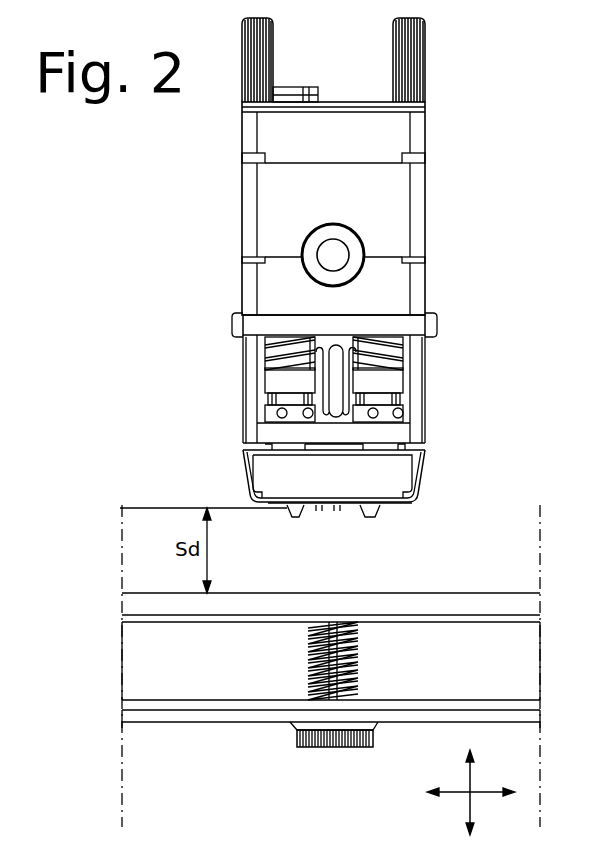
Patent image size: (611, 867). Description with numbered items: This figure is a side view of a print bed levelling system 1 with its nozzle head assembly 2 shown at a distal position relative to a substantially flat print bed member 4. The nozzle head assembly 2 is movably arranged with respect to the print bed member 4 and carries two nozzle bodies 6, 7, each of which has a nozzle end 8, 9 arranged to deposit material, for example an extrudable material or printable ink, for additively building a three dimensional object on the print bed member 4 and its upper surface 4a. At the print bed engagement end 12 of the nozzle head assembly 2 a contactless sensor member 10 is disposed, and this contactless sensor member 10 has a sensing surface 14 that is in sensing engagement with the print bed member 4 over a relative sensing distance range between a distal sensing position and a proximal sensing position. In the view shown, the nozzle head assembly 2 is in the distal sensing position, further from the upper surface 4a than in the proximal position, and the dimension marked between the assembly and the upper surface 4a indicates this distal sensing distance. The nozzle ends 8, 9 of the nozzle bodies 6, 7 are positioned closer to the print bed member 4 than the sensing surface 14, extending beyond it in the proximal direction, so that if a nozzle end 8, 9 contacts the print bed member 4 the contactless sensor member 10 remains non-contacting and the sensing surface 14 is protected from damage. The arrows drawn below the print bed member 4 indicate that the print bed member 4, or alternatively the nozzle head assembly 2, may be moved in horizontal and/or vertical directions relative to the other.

The print bed levelling system 1 is at (375, 304).
The nozzle head assembly 2 is at (383, 238).
The print bed member 4 is at (346, 649).
The upper surface 4a is at (457, 593).
The nozzle body 6 is at (283, 380).
The nozzle body 7 is at (388, 383).
The nozzle end 8 is at (300, 510).
The nozzle end 9 is at (371, 507).
The contactless sensor member 10 is at (337, 507).
The print bed engagement end 12 is at (383, 473).
The sensing surface 14 is at (318, 505).